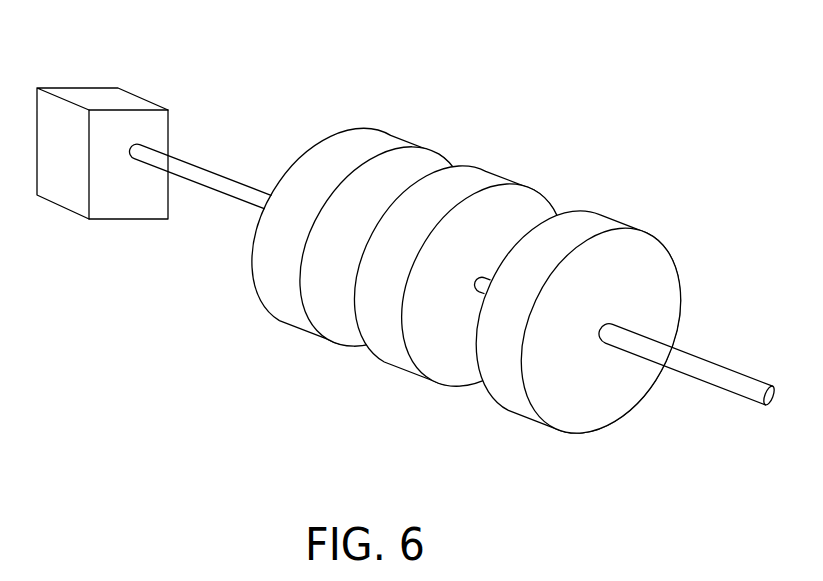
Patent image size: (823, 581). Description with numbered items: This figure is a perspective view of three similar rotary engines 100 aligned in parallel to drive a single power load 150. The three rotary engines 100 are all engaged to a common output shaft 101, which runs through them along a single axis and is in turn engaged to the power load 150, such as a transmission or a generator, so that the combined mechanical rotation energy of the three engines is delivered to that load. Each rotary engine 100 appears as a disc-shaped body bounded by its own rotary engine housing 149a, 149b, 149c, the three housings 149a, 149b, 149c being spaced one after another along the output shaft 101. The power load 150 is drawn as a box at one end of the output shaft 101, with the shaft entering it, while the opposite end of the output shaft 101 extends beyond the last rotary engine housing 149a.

The power load 150 is at (148, 100).
The output shaft 101 is at (206, 169).
The rotary engine 100 is at (459, 290).
The rotary engine housing 149a is at (655, 240).
The rotary engine housing 149b is at (522, 183).
The rotary engine housing 149c is at (408, 142).